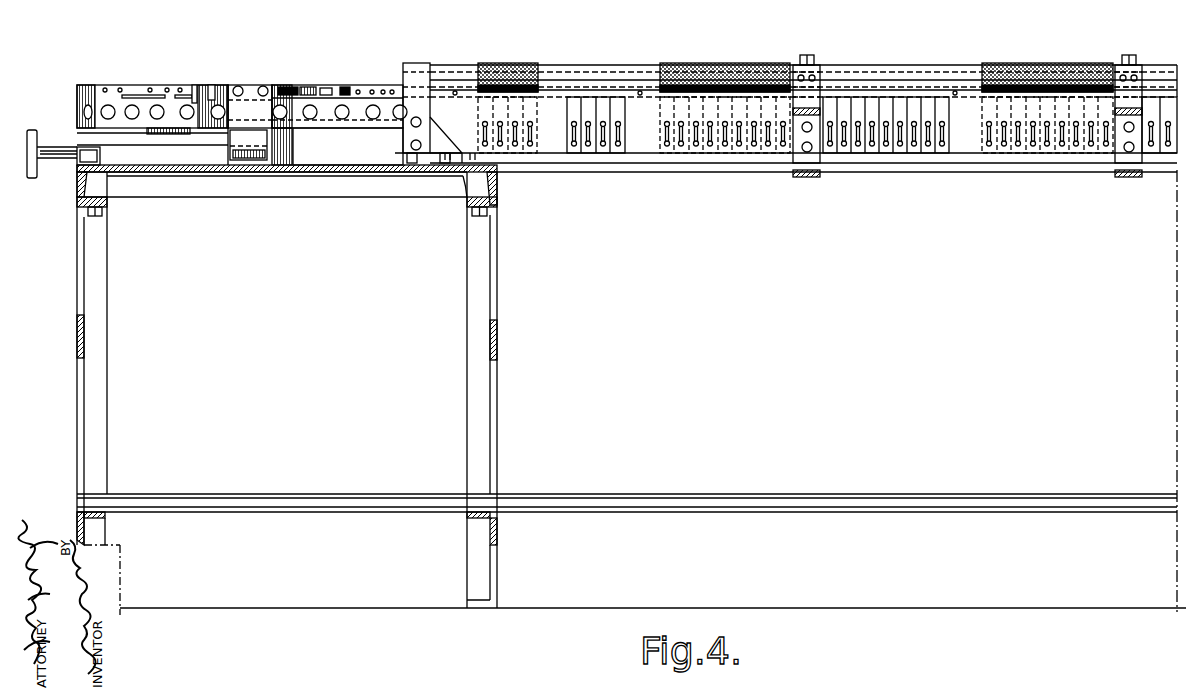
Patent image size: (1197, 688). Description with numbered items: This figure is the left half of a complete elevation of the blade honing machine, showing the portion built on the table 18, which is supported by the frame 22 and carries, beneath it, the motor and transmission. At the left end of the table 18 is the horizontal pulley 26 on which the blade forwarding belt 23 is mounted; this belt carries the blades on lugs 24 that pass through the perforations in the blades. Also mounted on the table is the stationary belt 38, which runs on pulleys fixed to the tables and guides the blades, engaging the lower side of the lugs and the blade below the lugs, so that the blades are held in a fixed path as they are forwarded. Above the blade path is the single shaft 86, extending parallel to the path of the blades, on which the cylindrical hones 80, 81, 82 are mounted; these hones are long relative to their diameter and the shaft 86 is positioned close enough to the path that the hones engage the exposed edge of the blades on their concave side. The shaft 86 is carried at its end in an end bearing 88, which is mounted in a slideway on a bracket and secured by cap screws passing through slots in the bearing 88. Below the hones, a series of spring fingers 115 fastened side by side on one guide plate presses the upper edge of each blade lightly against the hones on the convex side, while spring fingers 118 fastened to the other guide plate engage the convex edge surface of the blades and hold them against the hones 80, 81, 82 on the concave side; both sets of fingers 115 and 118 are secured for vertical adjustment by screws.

The table 18 is at (330, 178).
The frame 22 is at (497, 332).
The blade forwarding belt 23 is at (110, 85).
The lugs 24 is at (182, 90).
The horizontal pulley 26 is at (78, 125).
The stationary belt 38 is at (377, 128).
The hone 80 is at (1047, 67).
The hone 81 is at (679, 64).
The hone 82 is at (503, 63).
The shaft 86 is at (888, 70).
The end bearing 88 is at (416, 63).
The spring fingers 115 is at (605, 153).
The spring fingers 118 is at (740, 153).